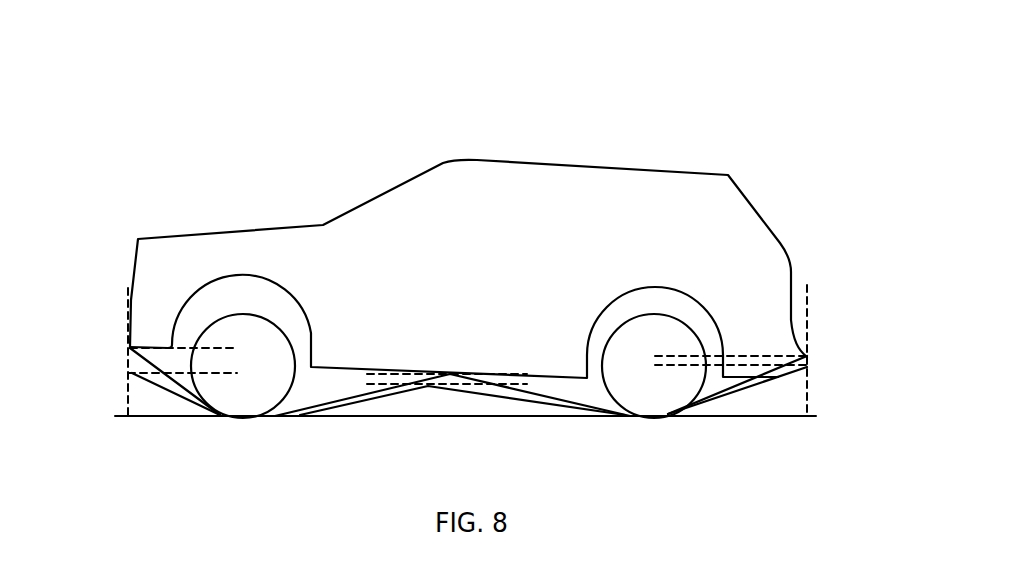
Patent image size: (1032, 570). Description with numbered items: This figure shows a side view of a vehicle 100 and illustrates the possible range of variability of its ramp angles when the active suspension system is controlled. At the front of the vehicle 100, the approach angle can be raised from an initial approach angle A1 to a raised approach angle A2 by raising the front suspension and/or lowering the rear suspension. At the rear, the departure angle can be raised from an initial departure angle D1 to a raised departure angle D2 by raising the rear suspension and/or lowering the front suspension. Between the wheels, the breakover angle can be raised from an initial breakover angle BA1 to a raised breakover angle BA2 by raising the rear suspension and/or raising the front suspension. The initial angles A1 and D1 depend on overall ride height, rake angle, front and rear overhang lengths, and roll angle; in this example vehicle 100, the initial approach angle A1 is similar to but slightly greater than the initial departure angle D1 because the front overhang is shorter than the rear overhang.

The vehicle 100 is at (820, 195).
The initial approach angle A1 is at (130, 373).
The raised approach angle A2 is at (130, 347).
The initial breakover angle BA1 is at (428, 386).
The raised breakover angle BA2 is at (453, 374).
The initial departure angle D1 is at (807, 367).
The raised departure angle D2 is at (807, 357).